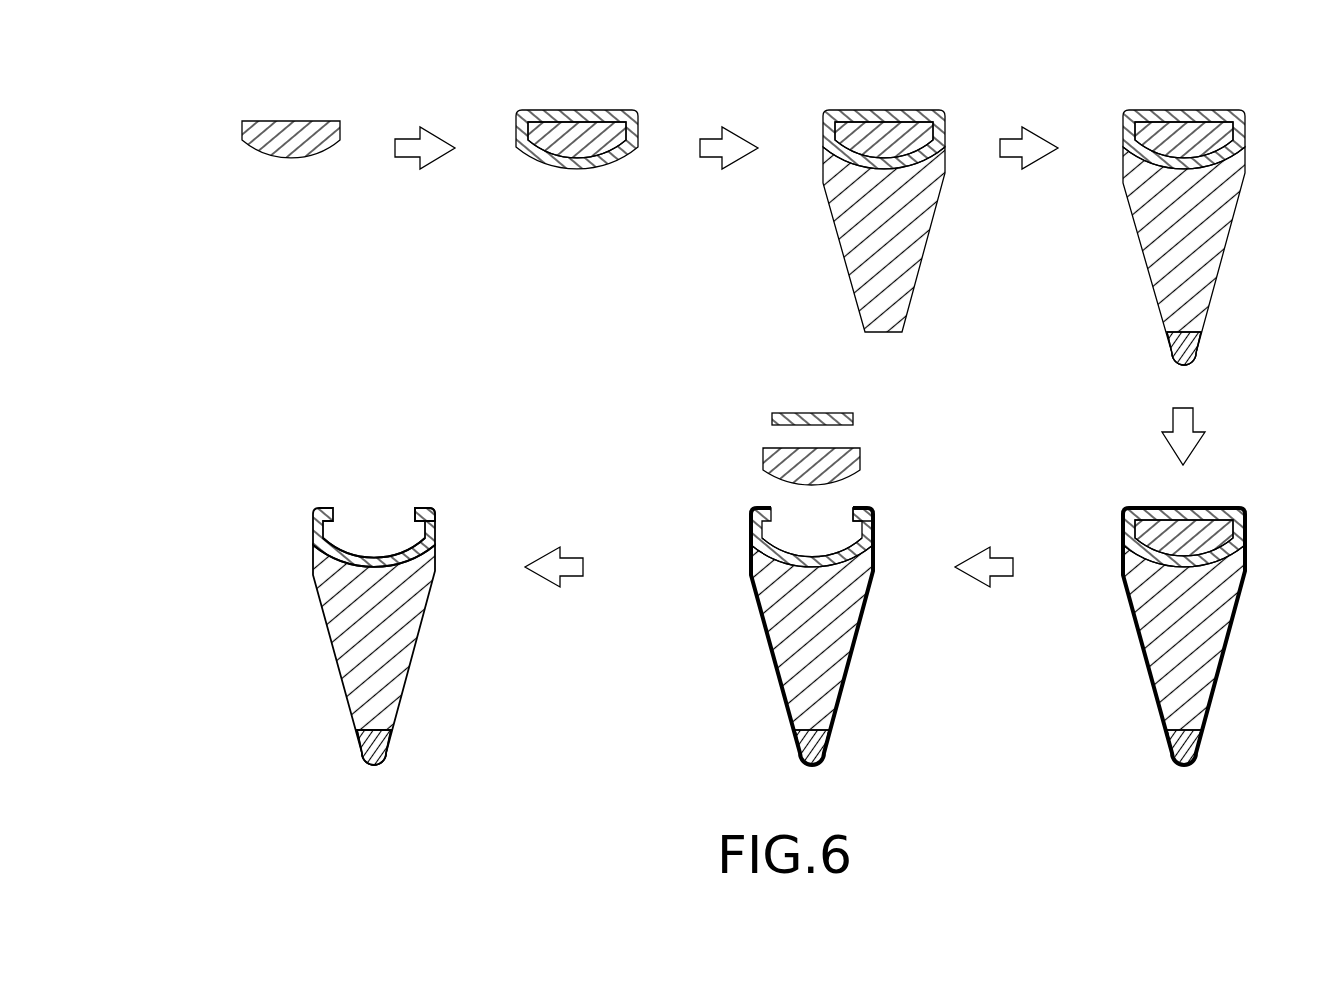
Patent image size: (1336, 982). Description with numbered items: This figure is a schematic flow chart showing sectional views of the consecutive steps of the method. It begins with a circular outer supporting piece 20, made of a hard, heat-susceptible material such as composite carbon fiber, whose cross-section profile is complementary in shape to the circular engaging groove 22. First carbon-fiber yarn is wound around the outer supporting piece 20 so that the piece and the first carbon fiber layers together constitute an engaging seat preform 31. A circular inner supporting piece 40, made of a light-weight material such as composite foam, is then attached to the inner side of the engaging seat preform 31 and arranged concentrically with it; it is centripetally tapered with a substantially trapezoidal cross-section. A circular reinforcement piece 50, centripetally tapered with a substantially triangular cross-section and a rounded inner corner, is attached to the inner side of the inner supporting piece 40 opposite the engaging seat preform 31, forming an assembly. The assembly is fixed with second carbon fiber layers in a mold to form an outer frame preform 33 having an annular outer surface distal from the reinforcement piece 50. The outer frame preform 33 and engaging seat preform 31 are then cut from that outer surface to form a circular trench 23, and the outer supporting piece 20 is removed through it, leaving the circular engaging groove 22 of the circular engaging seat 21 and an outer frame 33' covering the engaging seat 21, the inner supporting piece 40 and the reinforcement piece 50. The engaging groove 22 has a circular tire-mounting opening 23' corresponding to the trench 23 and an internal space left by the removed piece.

The circular outer supporting piece 20 is at (260, 127).
The engaging seat preform 31 is at (582, 113).
The circular inner supporting piece 40 is at (857, 243).
The circular reinforcement piece 50 is at (1172, 345).
The outer frame preform 33 is at (1204, 636).
The outer frame 33' is at (838, 636).
The circular engaging seat 21 is at (868, 510).
The circular engaging groove 22 is at (792, 533).
The circular trench 23 is at (748, 493).
The circular tire-mounting opening 23' is at (307, 490).